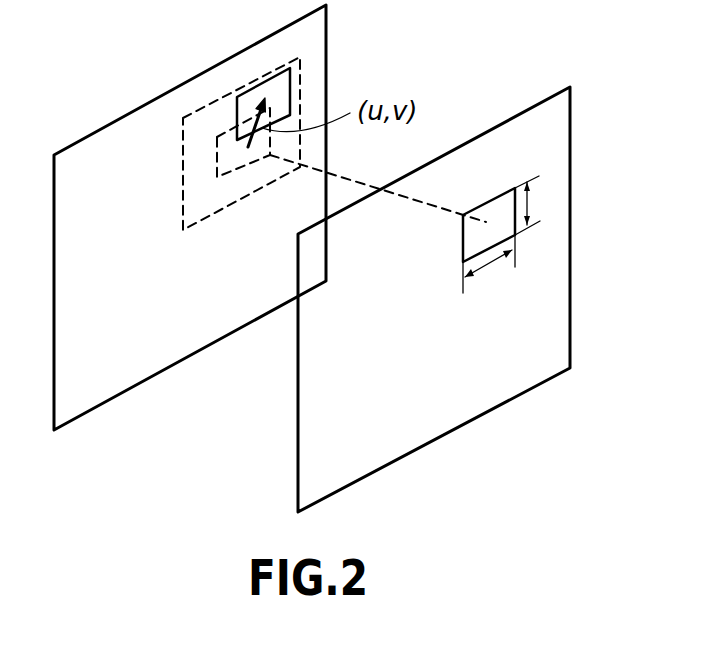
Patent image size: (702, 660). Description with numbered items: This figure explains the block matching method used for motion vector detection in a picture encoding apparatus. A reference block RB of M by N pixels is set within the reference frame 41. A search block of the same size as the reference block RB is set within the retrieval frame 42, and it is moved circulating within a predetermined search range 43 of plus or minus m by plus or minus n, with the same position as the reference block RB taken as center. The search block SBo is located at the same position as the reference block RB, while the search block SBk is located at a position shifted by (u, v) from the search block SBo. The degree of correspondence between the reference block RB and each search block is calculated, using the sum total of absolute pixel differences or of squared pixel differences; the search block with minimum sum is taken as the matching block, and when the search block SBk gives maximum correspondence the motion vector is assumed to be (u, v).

The reference frame 41 is at (462, 427).
The retrieval frame 42 is at (107, 402).
The search range 43 is at (183, 157).
The search (test) block SBk is at (237, 113).
The search (test) block SBo is at (232, 175).
The reference block RB is at (502, 187).